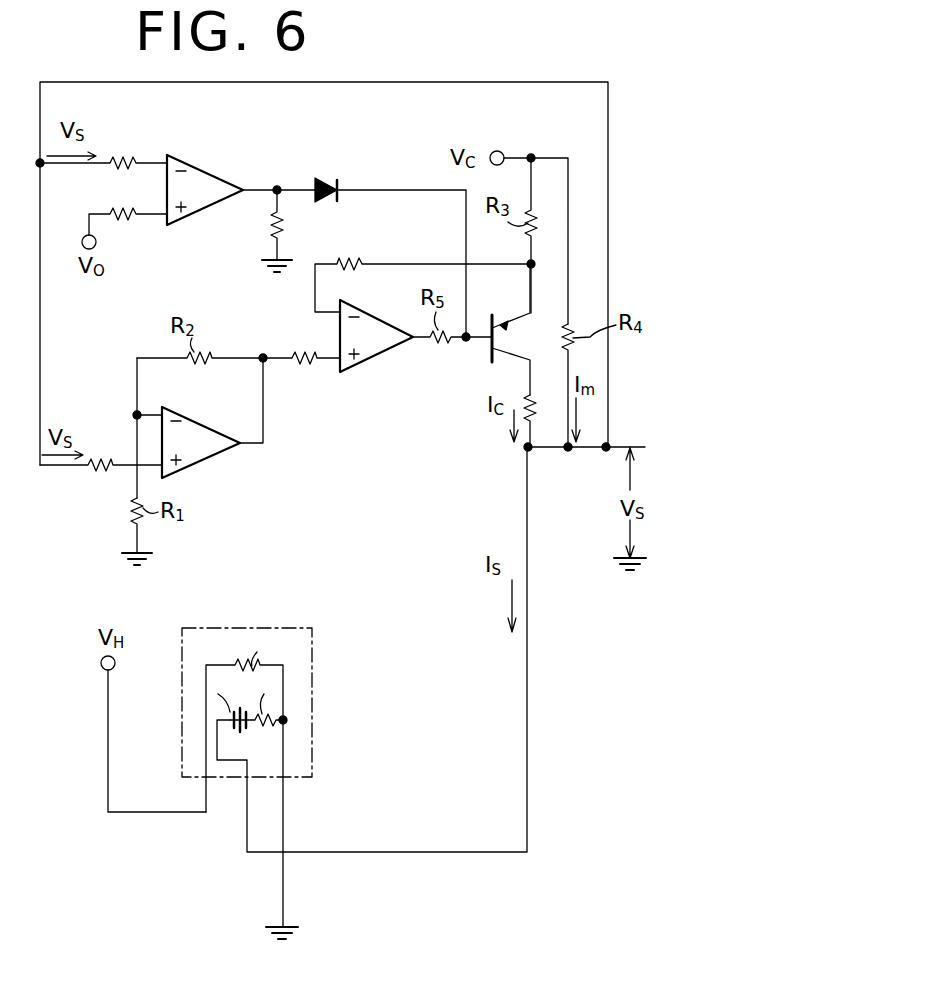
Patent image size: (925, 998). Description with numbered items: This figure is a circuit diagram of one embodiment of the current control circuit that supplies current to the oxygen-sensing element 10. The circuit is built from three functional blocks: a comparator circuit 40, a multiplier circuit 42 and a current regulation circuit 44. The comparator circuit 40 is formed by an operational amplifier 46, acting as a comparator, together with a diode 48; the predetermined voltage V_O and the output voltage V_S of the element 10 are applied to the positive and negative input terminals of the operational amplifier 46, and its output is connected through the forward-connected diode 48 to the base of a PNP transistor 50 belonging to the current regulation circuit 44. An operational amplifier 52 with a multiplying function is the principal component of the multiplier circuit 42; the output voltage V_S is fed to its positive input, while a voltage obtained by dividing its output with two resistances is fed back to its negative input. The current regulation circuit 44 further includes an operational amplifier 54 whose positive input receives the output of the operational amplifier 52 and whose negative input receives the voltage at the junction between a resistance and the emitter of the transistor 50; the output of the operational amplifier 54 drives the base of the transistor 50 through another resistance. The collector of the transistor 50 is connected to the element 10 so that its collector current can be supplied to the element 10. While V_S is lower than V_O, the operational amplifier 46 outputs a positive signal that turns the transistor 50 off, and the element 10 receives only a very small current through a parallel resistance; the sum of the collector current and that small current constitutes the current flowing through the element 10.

The oxygen-sensing element 10 is at (300, 628).
The comparator circuit 40 is at (243, 211).
The multiplier circuit 42 is at (124, 390).
The current regulation circuit 44 is at (431, 379).
The operational amplifier 46 is at (203, 162).
The diode 48 is at (336, 178).
The PNP transistor 50 is at (490, 347).
The operational amplifier 52 is at (214, 458).
The operational amplifier 54 is at (382, 360).